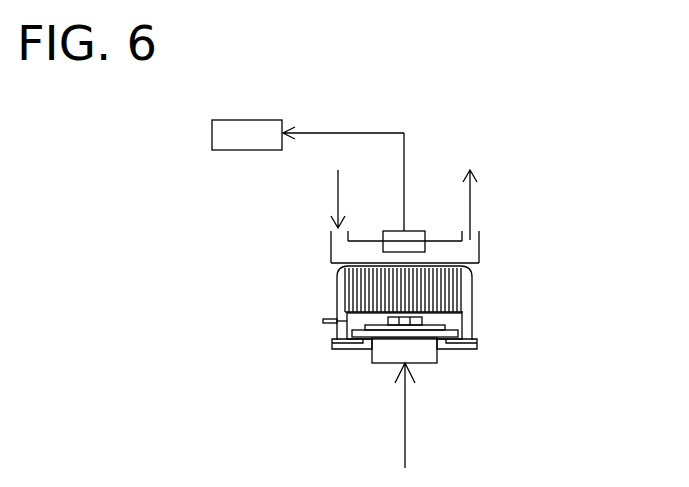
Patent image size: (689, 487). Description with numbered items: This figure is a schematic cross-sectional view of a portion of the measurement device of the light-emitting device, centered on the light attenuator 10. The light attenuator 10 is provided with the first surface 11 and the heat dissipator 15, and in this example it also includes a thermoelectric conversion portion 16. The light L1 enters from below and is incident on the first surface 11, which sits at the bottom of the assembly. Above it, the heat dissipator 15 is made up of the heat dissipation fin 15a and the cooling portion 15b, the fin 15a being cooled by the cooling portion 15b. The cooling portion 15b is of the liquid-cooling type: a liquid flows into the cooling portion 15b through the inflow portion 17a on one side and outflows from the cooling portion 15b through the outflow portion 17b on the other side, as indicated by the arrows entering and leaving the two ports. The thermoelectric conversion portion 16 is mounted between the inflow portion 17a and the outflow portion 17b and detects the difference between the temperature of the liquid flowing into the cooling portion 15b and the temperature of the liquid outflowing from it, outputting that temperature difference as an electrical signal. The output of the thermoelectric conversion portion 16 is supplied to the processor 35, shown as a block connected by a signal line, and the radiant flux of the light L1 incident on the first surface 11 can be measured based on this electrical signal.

The light attenuator 10 is at (578, 203).
The first surface 11 is at (425, 363).
The heat dissipator 15 is at (568, 272).
The heat dissipation fin 15a is at (457, 295).
The cooling portion 15b is at (468, 255).
The thermoelectric conversion portion 16 is at (415, 230).
The inflow portion 17a is at (328, 245).
The outflow portion 17b is at (482, 240).
The processor 35 is at (240, 150).
The light beam L1 is at (403, 418).